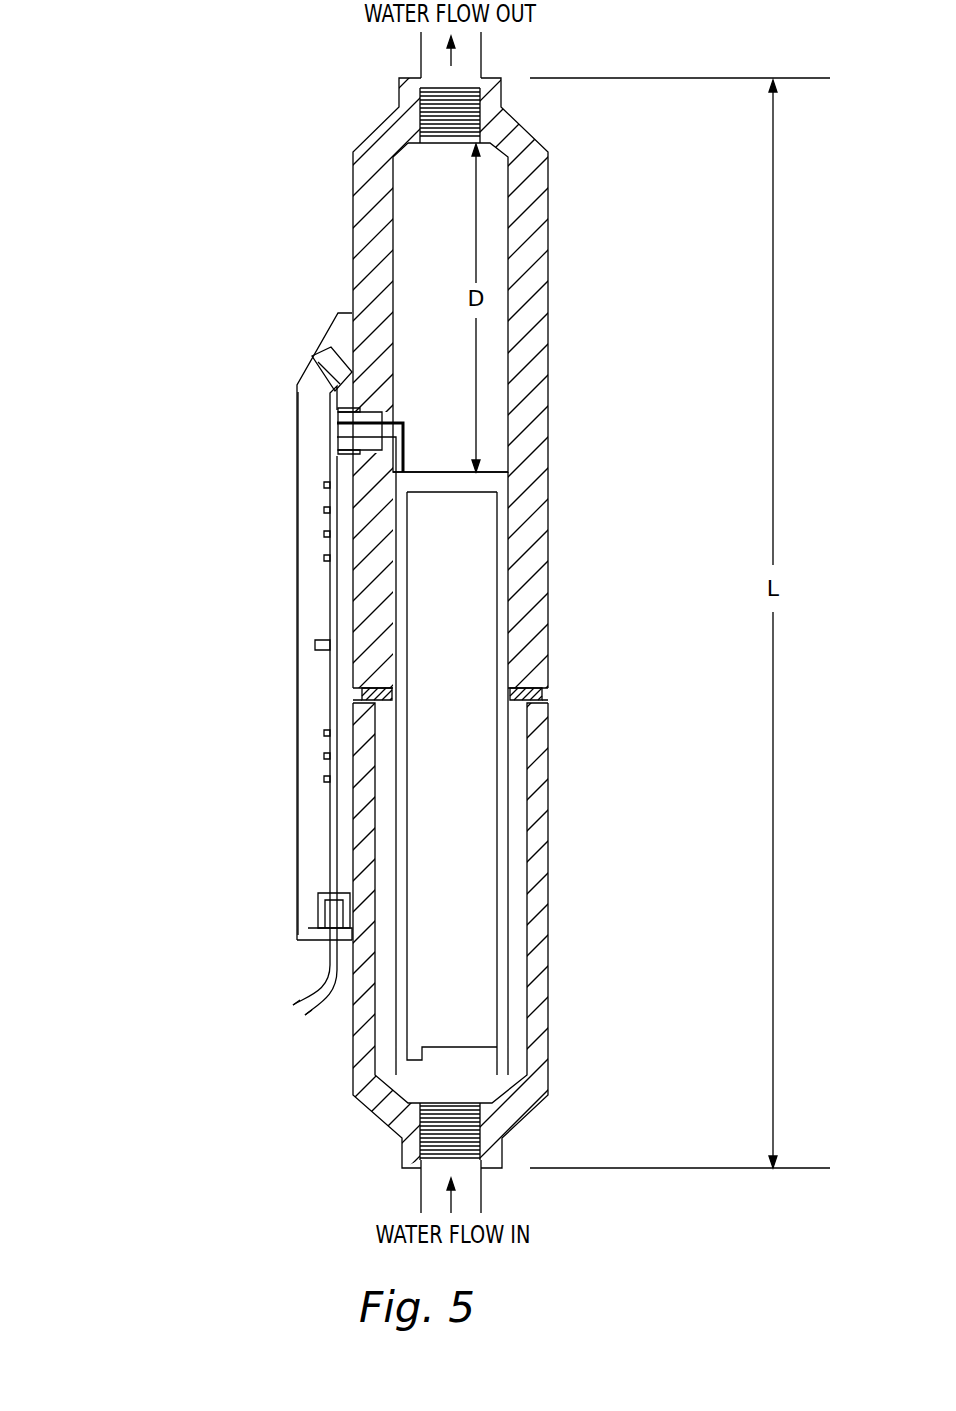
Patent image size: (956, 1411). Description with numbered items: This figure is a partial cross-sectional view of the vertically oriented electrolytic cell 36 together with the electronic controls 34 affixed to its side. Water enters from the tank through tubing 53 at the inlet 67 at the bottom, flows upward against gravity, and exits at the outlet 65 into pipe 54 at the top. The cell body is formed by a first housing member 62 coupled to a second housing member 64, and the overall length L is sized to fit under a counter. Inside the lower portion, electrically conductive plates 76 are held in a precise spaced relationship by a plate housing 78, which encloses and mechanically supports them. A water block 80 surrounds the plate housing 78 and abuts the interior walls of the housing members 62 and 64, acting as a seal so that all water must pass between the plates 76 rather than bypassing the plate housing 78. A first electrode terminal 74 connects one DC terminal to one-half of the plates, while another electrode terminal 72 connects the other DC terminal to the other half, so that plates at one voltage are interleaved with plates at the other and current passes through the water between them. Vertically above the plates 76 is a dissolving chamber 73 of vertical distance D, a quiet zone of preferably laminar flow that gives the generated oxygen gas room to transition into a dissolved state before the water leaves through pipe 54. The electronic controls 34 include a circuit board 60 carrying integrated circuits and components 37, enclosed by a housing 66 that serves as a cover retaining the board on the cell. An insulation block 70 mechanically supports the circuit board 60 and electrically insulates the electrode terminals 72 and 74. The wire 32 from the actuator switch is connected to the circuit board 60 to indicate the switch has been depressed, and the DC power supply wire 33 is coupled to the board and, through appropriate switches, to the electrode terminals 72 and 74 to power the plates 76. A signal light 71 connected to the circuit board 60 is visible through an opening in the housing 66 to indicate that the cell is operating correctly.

The wire 32 is at (315, 980).
The DC power supply wire 33 is at (312, 1018).
The electronic controls 34 is at (283, 525).
The electrolytic cell 36 is at (140, 148).
The components 37 is at (325, 737).
The tubing 53 is at (421, 1192).
The pipe 54 is at (420, 56).
The circuit board 60 is at (330, 465).
The first housing member 62 is at (552, 890).
The second housing member 64 is at (552, 305).
The outlet 65 is at (500, 100).
The housing 66 is at (295, 833).
The inlet 67 is at (502, 1155).
The insulation block 70 is at (355, 413).
The signal light 71 is at (350, 318).
The electrode terminal 72 is at (395, 462).
The dissolving chamber 73 is at (430, 250).
The first electrode terminal 74 is at (408, 430).
The plates 76 is at (480, 550).
The plate housing 78 is at (508, 485).
The water block 80 is at (545, 695).